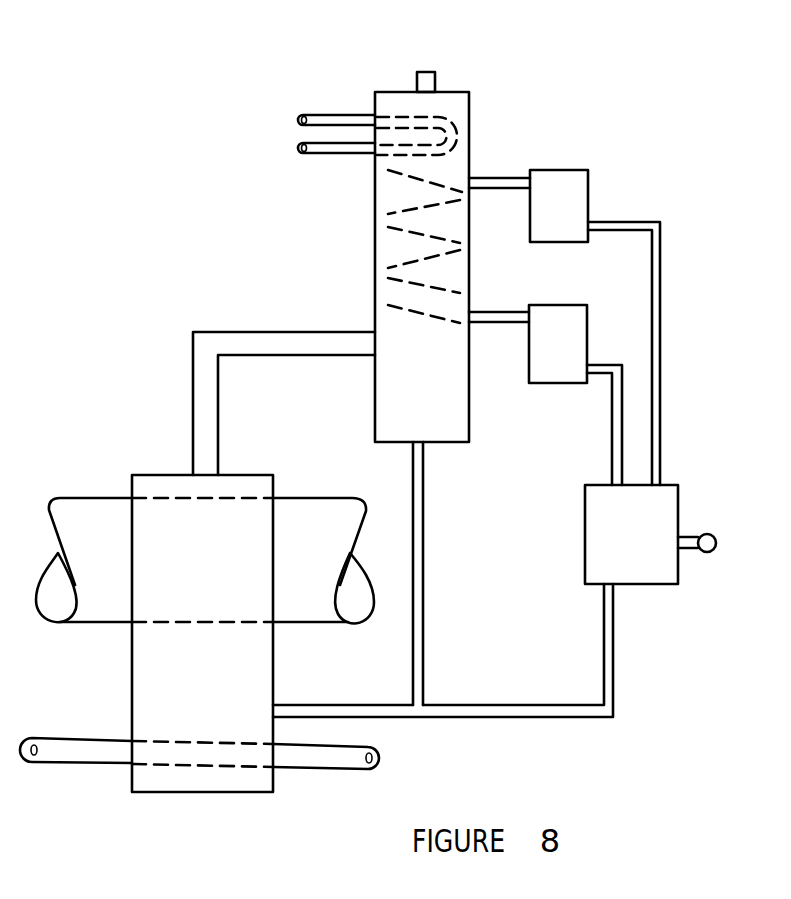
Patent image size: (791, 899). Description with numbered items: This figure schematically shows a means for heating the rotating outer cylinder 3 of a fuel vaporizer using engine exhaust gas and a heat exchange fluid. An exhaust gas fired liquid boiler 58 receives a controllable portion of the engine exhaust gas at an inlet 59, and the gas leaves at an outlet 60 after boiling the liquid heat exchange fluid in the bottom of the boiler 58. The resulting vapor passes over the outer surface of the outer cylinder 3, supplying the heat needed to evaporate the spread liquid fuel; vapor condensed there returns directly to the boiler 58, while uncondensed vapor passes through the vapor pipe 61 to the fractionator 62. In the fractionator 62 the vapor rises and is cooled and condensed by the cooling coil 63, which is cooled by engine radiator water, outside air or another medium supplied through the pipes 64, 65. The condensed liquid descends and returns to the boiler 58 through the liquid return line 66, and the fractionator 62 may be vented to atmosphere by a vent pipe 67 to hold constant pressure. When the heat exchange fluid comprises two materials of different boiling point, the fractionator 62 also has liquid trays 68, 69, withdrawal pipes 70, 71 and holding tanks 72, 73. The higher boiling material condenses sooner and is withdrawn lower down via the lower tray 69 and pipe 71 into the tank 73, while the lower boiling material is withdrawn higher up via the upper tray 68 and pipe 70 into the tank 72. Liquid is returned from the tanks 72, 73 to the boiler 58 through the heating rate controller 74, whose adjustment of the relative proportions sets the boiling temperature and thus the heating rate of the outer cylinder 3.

The outer hollow cylinder 3 is at (170, 537).
The exhaust gas fired liquid boiler 58 is at (130, 638).
The exhaust gas inlet 59 is at (70, 767).
The exhaust gas outlet 60 is at (333, 770).
The vapor pipe 61 is at (192, 373).
The fractionator 62 is at (375, 232).
The cooling coil 63 is at (430, 118).
The cooling medium pipe 64 is at (337, 113).
The cooling medium pipe 65 is at (322, 155).
The liquid return line 66 is at (425, 600).
The vent pipe 67 is at (427, 72).
The upper liquid tray 68 is at (430, 178).
The lower liquid tray 69 is at (430, 318).
The upper liquid withdrawal pipe 70 is at (482, 190).
The lower liquid withdrawal pipe 71 is at (485, 323).
The liquid holding tank 72 is at (590, 192).
The liquid holding tank 73 is at (553, 305).
The heating rate controller 74 is at (680, 495).